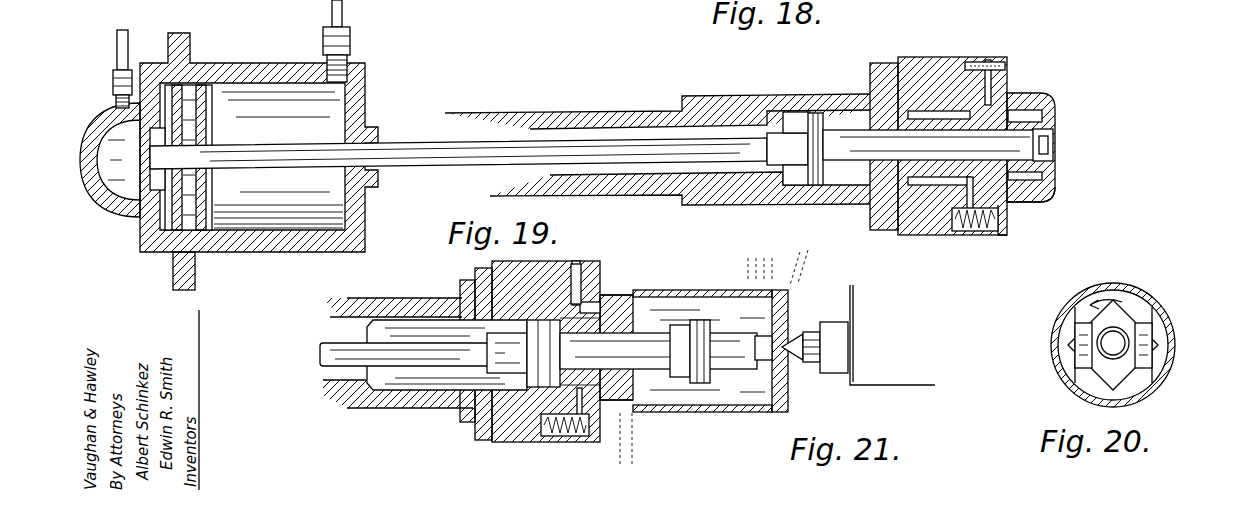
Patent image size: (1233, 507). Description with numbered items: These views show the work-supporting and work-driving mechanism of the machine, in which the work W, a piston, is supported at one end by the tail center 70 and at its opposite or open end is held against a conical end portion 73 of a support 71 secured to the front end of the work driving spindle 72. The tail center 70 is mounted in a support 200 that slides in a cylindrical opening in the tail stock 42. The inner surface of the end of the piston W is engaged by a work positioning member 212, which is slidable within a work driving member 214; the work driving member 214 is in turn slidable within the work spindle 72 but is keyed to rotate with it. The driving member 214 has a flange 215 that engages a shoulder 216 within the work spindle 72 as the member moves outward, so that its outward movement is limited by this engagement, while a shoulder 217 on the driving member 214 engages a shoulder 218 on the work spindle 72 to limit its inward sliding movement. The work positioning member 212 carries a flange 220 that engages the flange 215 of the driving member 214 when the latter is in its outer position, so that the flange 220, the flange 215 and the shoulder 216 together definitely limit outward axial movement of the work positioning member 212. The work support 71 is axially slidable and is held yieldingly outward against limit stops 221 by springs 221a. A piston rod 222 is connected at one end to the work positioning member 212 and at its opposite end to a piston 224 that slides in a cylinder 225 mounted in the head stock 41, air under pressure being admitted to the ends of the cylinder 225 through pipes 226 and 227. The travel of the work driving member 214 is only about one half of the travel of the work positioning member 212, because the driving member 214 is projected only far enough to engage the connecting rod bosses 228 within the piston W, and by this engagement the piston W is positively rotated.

In FIG. 19, the head stock 41 is at (195, 268).
In FIG. 21, the tail stock 42 is at (892, 380).
In FIG. 21, the tail center 70 is at (790, 332).
In FIG. 19, the support 71 is at (1032, 198).
In FIG. 21, the support 71 is at (615, 315).
In FIG. 19, the work driving spindle 72 is at (800, 97).
In FIG. 21, the work driving spindle 72 is at (410, 298).
In FIG. 19, the conical end portion 73 is at (1045, 95).
In FIG. 21, the conical end portion 73 is at (640, 295).
In FIG. 21, the support 200 is at (830, 375).
In FIG. 19, the work positioning member 212 is at (985, 150).
In FIG. 21, the work positioning member 212 is at (735, 345).
In FIG. 20, the work positioning member 212 is at (1105, 345).
In FIG. 19, the work driving member 214 is at (1112, 131).
In FIG. 21, the work driving member 214 is at (705, 385).
In FIG. 20, the work driving member 214 is at (1130, 305).
In FIG. 19, the flange 215 is at (890, 220).
In FIG. 21, the flange 215 is at (550, 375).
In FIG. 19, the shoulder 216 is at (957, 190).
In FIG. 21, the shoulder 216 is at (562, 351).
In FIG. 19, the shoulder 217 is at (1017, 118).
In FIG. 21, the shoulder 217 is at (668, 380).
In FIG. 19, the shoulder 218 is at (995, 105).
In FIG. 21, the shoulder 218 is at (620, 300).
In FIG. 19, the flange 220 is at (818, 120).
In FIG. 21, the flange 220 is at (555, 335).
In FIG. 19, the limit stops 221 is at (1012, 228).
In FIG. 21, the limit stops 221 is at (615, 440).
In FIG. 19, the springs 221a is at (985, 230).
In FIG. 21, the springs 221a is at (557, 436).
In FIG. 19, the piston rod 222 is at (405, 150).
In FIG. 21, the piston rod 222 is at (320, 357).
In FIG. 19, the piston 224 is at (190, 135).
In FIG. 19, the cylinder 225 is at (258, 76).
In FIG. 19, the pipe 226 is at (118, 40).
In FIG. 19, the pipe 227 is at (344, 10).
In FIG. 20, the connecting rod bosses 228 is at (1140, 325).
In FIG. 21, the work W is at (690, 290).
In FIG. 20, the work W is at (1172, 340).